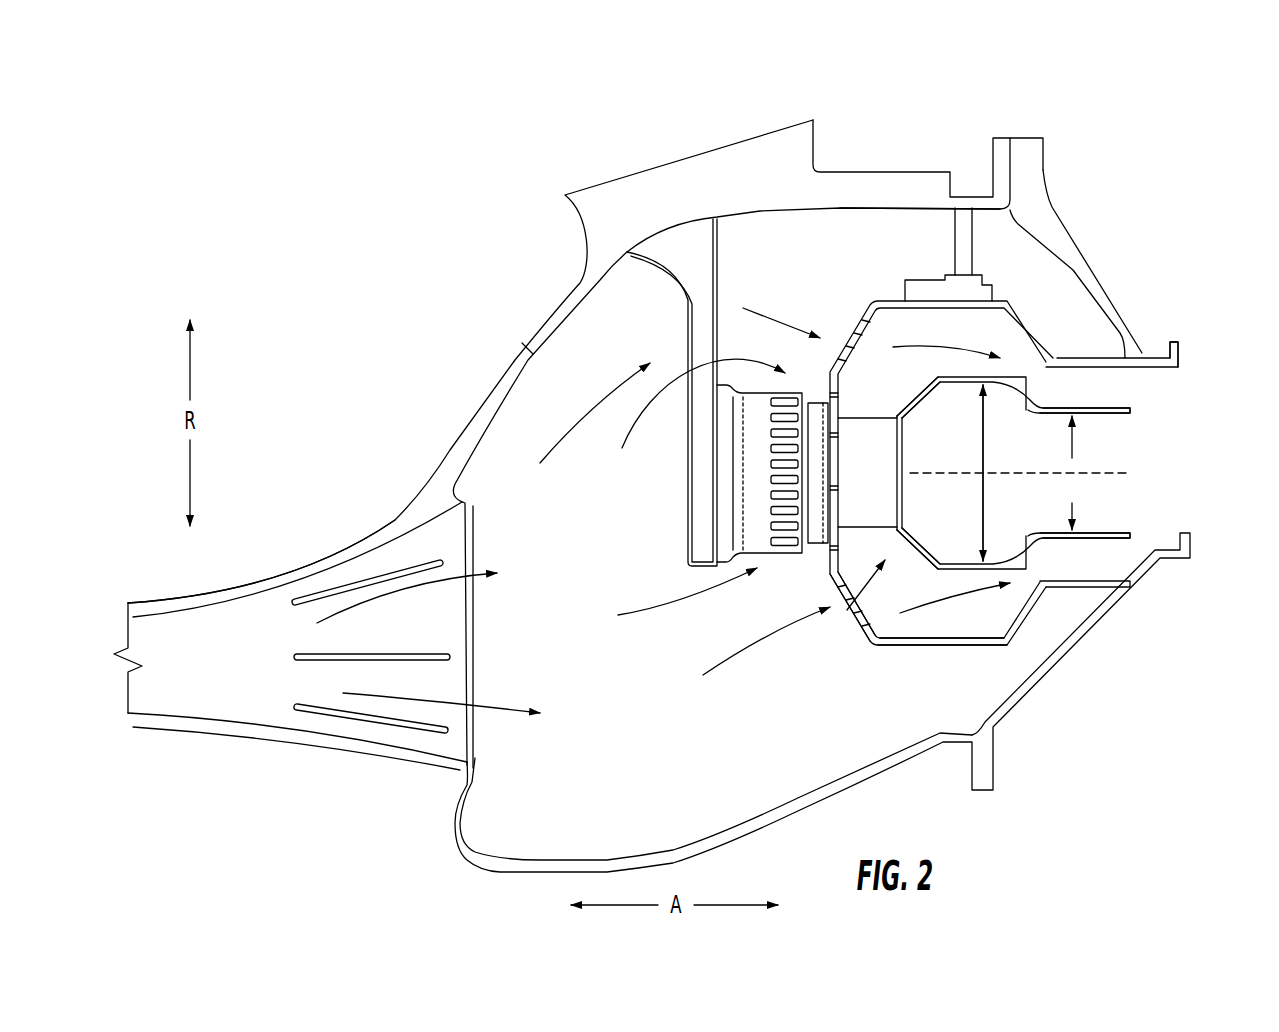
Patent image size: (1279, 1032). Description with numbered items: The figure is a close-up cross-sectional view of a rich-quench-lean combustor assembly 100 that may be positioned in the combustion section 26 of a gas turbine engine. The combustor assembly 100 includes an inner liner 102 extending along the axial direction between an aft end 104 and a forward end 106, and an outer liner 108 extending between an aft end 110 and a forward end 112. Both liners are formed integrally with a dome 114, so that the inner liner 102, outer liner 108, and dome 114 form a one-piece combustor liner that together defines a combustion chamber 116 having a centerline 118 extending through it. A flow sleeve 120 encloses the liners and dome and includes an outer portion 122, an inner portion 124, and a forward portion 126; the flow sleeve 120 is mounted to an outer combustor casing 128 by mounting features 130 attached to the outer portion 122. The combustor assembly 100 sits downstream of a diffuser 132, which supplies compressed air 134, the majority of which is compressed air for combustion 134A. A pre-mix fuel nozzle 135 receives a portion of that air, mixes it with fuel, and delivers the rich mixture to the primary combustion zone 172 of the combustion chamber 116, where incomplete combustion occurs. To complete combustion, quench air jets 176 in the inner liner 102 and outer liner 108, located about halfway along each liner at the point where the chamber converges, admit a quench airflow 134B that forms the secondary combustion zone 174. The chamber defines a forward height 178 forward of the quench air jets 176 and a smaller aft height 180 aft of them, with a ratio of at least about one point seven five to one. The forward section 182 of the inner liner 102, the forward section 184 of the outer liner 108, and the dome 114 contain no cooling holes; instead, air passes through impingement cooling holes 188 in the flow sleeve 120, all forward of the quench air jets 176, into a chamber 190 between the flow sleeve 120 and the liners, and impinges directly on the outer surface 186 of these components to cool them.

The combustion section 26 is at (467, 238).
The combustor assembly 100 is at (853, 228).
The inner liner 102 is at (1050, 590).
The aft end of inner liner 104 is at (1133, 535).
The forward end of inner liner 106 is at (863, 624).
The outer liner 108 is at (1005, 293).
The aft end of outer liner 110 is at (1140, 405).
The forward end of outer liner 112 is at (897, 408).
The dome 114 is at (910, 457).
The combustion chamber 116 is at (1010, 463).
The centerline 118 is at (1128, 470).
The flow sleeve 120 is at (1022, 431).
The outer portion of flow sleeve 122 is at (966, 247).
The inner portion of flow sleeve 124 is at (943, 667).
The forward portion of flow sleeve 126 is at (835, 538).
The outer combustor casing 128 is at (804, 168).
The mounting feature 130 is at (1010, 205).
The diffuser 132 is at (397, 560).
The compressed air 134 is at (433, 703).
The compressed air for combustion 134A is at (645, 422).
The quench airflow 134B is at (955, 342).
The fuel nozzle 135 is at (753, 497).
The primary combustion zone 172 is at (934, 506).
The secondary combustion zone 174 is at (1056, 504).
The quench air jets 176 is at (1048, 377).
The forward height 178 is at (982, 520).
The aft height 180 is at (1073, 440).
The forward section of inner liner 182 is at (943, 375).
The forward section of outer liner 184 is at (943, 570).
The outer surface 186 is at (890, 520).
The impingement cooling holes 188 is at (862, 311).
The chamber 190 is at (892, 620).